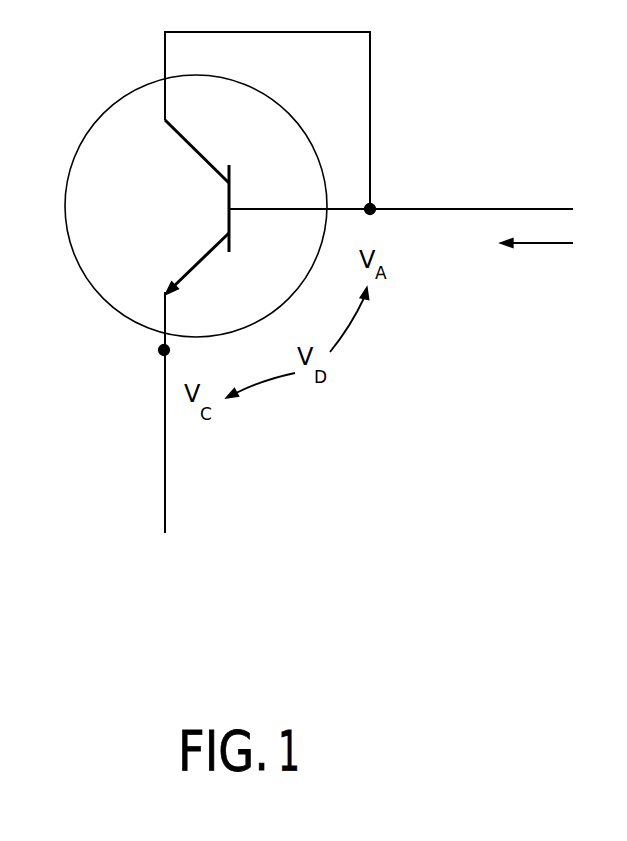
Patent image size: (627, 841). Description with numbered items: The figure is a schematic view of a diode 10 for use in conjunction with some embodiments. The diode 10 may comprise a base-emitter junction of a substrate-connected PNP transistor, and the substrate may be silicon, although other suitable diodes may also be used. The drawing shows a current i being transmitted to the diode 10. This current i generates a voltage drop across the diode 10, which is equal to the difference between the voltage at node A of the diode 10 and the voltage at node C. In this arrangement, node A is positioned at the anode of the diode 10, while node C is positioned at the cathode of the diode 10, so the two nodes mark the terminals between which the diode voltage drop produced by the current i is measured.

The diode 10 is at (118, 102).
The node A is at (381, 197).
The node C is at (149, 352).
The current i is at (536, 259).